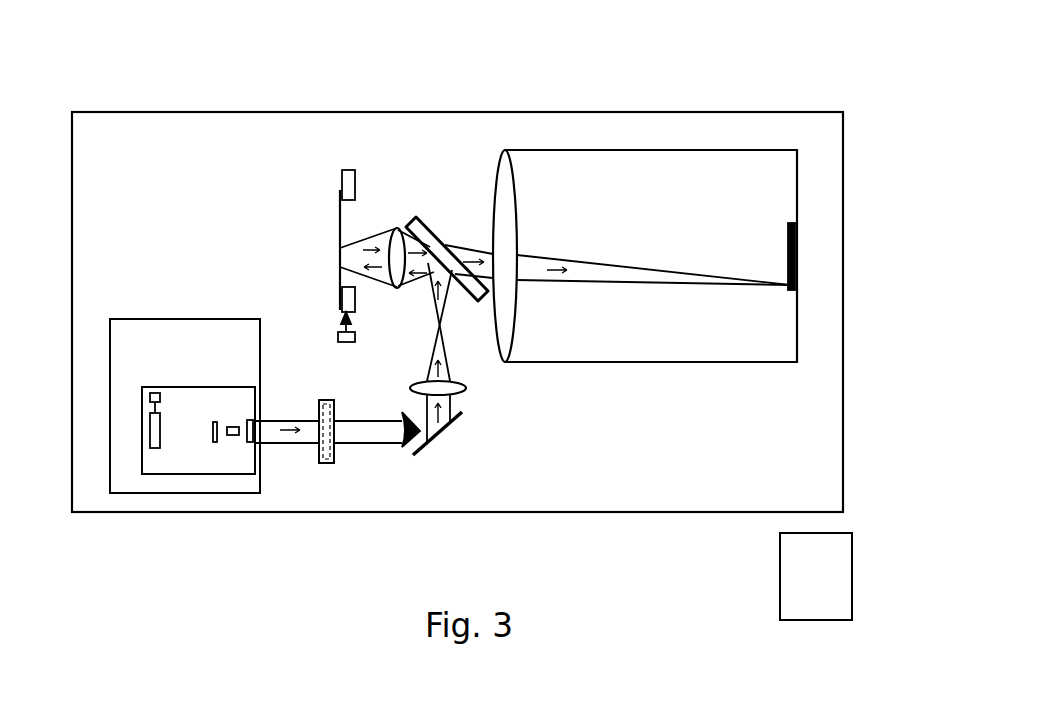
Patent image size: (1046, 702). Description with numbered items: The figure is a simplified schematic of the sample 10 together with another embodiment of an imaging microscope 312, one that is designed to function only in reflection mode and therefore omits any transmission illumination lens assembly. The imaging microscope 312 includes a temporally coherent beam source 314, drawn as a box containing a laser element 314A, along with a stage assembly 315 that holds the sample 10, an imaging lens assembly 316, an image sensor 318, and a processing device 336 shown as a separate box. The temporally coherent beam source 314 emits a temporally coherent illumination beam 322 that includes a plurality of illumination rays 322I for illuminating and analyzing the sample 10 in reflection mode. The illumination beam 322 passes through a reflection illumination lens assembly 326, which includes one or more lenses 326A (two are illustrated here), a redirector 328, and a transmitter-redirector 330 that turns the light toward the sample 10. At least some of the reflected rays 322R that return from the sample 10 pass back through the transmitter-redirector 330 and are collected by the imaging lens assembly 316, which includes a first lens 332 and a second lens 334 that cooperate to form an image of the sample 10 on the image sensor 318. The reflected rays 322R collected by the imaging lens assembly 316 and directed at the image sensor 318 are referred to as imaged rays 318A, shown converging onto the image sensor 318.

The sample 10 is at (338, 243).
The imaging microscope 312 is at (783, 103).
The temporally coherent beam source 314 is at (160, 356).
The laser 314A is at (177, 476).
The stage assembly 315 is at (340, 301).
The imaging lens assembly 316 is at (362, 63).
The image sensor 318 is at (798, 243).
The imaged rays 318A is at (550, 262).
The temporally coherent illumination beam 322 is at (307, 444).
The illumination rays 322I is at (288, 427).
The reflected rays 322R is at (375, 248).
The reflection illumination lens assembly 326 is at (556, 383).
The lens 326A is at (467, 391).
The redirector 328 is at (443, 433).
The transmitter-redirector 330 is at (466, 285).
The first lens 332 is at (397, 226).
The second lens 334 is at (495, 172).
The processing device 336 is at (792, 594).